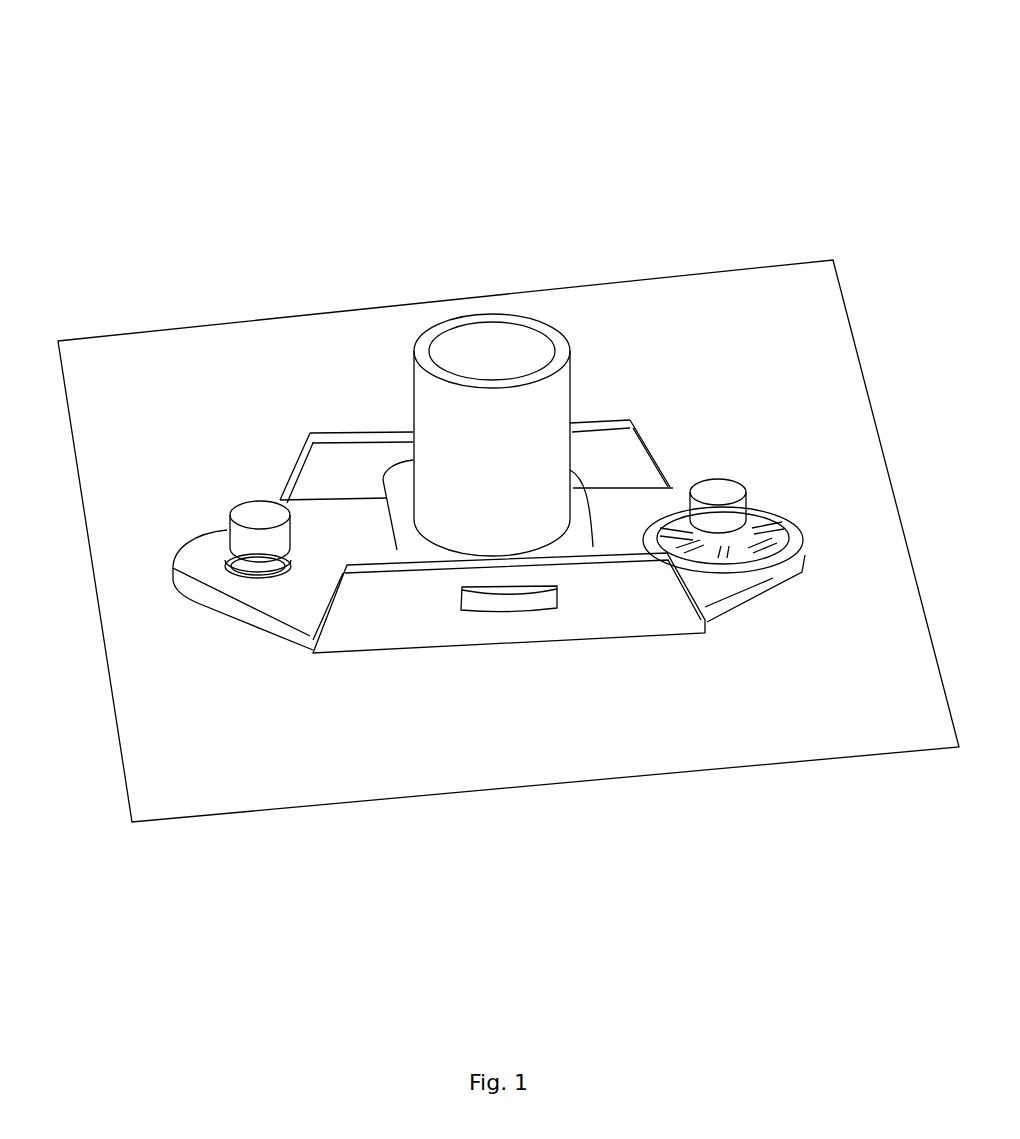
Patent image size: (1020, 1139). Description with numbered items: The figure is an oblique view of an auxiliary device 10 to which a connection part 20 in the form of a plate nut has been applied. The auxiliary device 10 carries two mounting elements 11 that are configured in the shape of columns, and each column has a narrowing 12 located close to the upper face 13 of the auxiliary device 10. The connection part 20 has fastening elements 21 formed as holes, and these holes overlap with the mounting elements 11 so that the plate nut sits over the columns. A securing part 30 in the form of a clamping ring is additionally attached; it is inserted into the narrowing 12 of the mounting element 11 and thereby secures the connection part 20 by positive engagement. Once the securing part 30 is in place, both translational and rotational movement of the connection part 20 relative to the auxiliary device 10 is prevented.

The auxiliary device 10 is at (204, 288).
The mounting element 11 is at (250, 513).
The narrowing 12 is at (274, 563).
The upper face 13 is at (292, 385).
The connection part 20 is at (568, 320).
The fastening element 21 is at (241, 598).
The securing part 30 is at (769, 485).